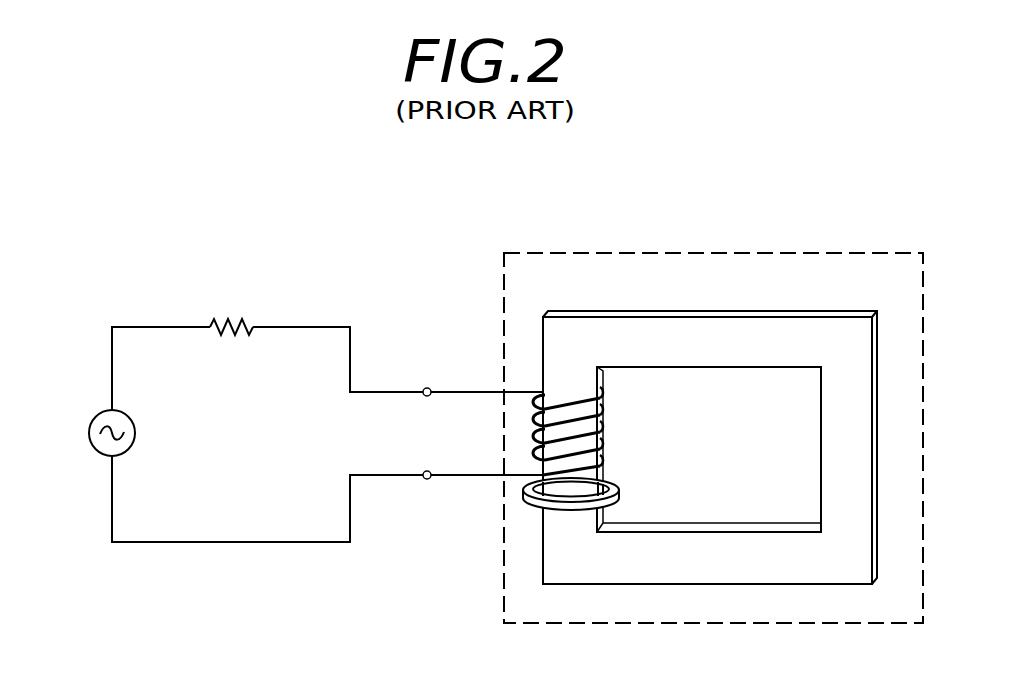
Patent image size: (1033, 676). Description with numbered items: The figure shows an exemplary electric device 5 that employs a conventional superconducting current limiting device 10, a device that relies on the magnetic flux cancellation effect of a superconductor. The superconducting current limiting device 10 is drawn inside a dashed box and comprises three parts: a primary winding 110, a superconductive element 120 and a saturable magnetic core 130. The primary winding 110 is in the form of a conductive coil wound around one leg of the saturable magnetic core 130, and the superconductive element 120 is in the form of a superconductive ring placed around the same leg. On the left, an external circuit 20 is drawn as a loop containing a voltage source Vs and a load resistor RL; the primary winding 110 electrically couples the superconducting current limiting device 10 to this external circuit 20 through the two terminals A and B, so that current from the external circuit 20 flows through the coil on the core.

The electric device 5 is at (666, 178).
The superconducting current limiting device 10 is at (720, 253).
The external circuit 20 is at (107, 298).
The primary winding 110 is at (617, 395).
The superconductive element 120 is at (614, 488).
The saturable magnetic core 130 is at (783, 311).